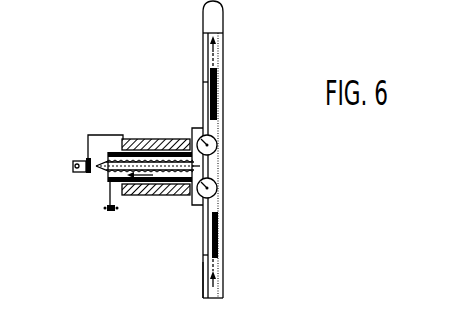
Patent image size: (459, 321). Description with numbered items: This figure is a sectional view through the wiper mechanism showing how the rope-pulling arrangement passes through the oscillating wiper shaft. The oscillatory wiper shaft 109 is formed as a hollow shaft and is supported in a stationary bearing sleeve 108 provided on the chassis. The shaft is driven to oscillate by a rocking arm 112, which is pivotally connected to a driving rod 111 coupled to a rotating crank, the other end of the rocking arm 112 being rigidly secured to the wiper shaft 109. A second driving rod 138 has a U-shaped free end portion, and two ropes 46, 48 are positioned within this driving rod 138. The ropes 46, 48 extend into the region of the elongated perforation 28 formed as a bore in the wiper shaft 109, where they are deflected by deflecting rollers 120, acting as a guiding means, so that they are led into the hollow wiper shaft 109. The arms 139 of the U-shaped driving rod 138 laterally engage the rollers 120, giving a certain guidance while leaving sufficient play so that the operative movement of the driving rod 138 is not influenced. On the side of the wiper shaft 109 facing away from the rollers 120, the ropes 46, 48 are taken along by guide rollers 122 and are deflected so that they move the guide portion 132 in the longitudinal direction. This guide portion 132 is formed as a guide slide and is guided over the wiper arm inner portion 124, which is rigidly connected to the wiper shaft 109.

The perforation 28 is at (150, 176).
The rope 46 is at (217, 115).
The rope 48 is at (220, 232).
The bearing sleeve 108 is at (160, 140).
The wiper shaft 109 is at (157, 195).
The driving rod 111 is at (122, 211).
The rocking arm 112 is at (110, 192).
The deflecting rollers 120 is at (90, 174).
The guide rollers 122 is at (207, 145).
The wiper arm inner portion 124 is at (210, 268).
The guide portion 132 is at (207, 47).
The driving rod 138 is at (72, 162).
The arms 139 is at (86, 160).